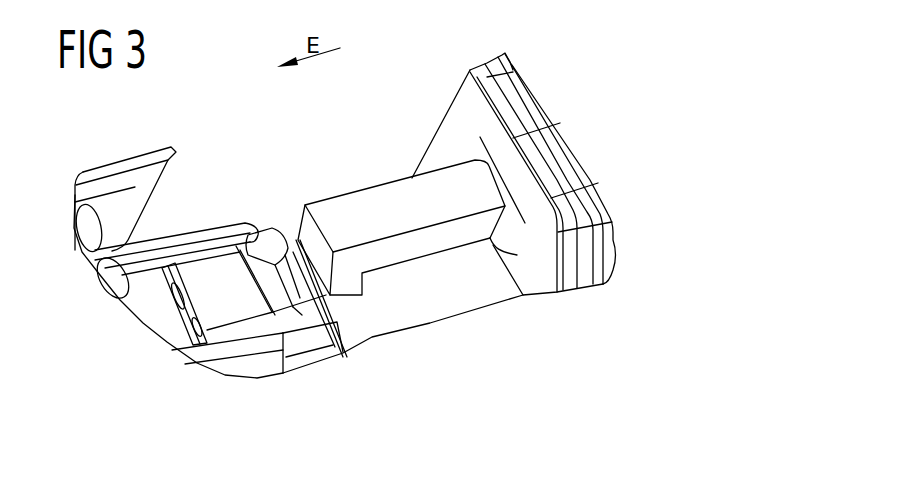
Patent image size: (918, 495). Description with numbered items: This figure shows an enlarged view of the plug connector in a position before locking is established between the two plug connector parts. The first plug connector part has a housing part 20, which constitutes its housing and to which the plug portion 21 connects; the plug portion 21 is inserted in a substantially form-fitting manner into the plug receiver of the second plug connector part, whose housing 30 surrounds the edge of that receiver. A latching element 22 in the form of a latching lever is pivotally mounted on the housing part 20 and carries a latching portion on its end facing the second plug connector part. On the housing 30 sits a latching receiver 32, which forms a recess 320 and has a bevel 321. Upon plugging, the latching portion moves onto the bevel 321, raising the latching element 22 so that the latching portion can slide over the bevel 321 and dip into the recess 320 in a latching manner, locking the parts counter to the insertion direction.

The housing part 20 is at (523, 105).
The plug portion 21 is at (420, 310).
The latching element 22 is at (373, 170).
The housing 30 is at (305, 358).
The latching receiver 32 is at (210, 205).
The recess 320 is at (153, 312).
The bevel 321 is at (258, 273).